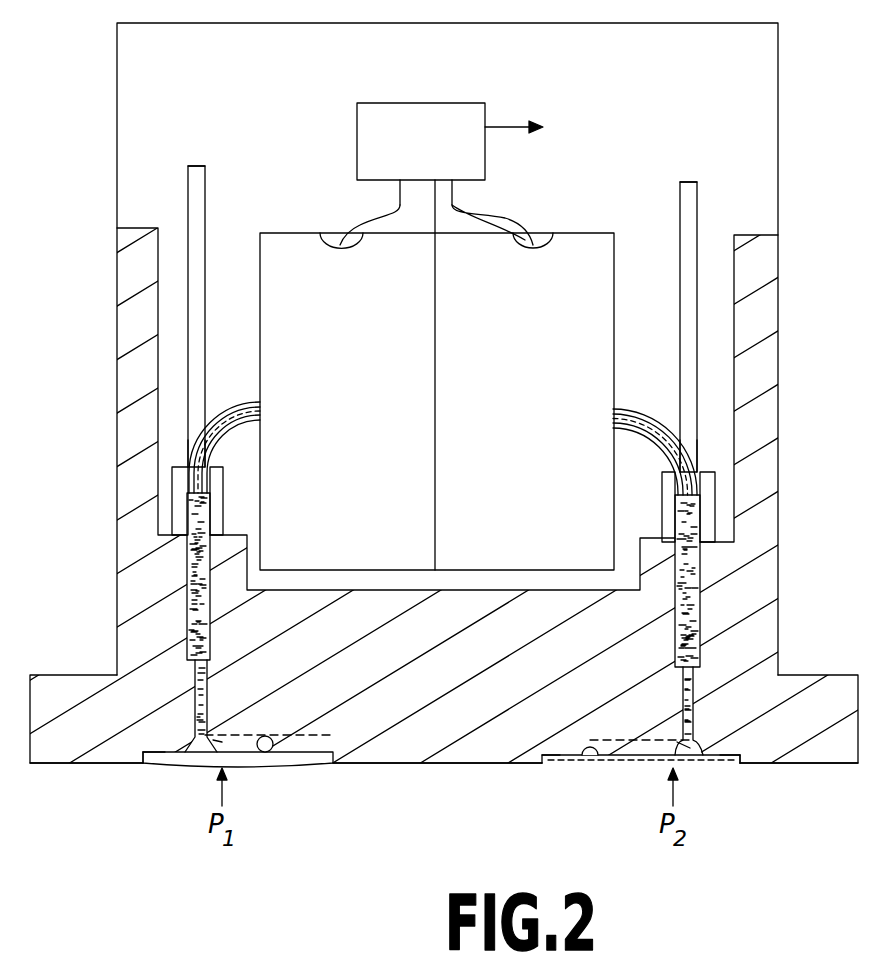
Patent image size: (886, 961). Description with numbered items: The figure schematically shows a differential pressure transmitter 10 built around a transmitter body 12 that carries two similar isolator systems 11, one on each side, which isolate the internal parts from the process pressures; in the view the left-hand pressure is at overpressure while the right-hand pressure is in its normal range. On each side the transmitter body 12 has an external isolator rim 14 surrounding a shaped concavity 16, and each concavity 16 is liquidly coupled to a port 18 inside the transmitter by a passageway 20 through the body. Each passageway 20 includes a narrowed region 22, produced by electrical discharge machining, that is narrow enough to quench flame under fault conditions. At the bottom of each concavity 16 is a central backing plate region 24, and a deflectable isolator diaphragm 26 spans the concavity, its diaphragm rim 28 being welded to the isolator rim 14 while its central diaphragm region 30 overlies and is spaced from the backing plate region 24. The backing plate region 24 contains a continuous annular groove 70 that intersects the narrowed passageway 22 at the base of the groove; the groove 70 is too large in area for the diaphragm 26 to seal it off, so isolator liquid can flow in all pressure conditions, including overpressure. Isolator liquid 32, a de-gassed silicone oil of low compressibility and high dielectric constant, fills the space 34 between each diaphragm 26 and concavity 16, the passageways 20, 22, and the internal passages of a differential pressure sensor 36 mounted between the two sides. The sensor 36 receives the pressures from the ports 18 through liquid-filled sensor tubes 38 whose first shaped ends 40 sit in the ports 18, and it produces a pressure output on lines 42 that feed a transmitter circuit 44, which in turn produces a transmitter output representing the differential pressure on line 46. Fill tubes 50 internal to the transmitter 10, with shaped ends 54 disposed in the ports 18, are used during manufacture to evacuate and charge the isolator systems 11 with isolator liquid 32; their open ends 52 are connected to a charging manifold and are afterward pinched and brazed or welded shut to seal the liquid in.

The differential pressure transmitter 10 is at (117, 48).
The isolator system 11 is at (97, 461).
The transmitter body 12 is at (117, 330).
The external isolator rim 14 is at (143, 765).
The shaped concavity 16 is at (166, 752).
The port 18 is at (172, 483).
The passageway 20 is at (187, 553).
The narrowed region 22 is at (193, 700).
The central backing plate region 24 is at (242, 752).
The isolator diaphragm 26 is at (320, 764).
The diaphragm rim 28 is at (145, 765).
The central diaphragm region 30 is at (240, 754).
The isolator liquid 32 is at (205, 514).
The space 34 is at (552, 756).
The differential pressure sensor 36 is at (278, 233).
The sensor tube 38 is at (240, 402).
The first shaped end 40 is at (213, 473).
The line 42 is at (462, 215).
The transmitter circuit 44 is at (421, 154).
The line 46 is at (500, 127).
The fill tube 50 is at (188, 210).
The open end 52 is at (192, 166).
The shaped end 54 is at (188, 447).
The annular groove 70 is at (222, 742).